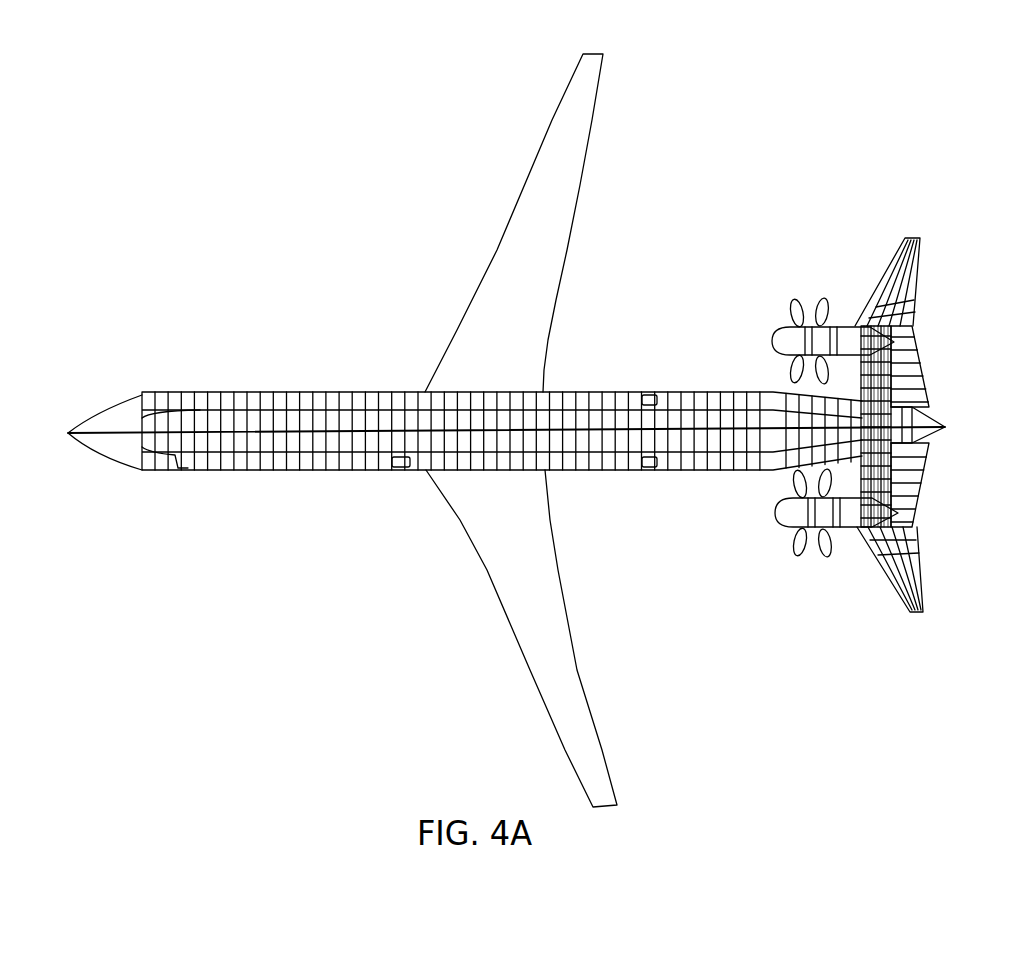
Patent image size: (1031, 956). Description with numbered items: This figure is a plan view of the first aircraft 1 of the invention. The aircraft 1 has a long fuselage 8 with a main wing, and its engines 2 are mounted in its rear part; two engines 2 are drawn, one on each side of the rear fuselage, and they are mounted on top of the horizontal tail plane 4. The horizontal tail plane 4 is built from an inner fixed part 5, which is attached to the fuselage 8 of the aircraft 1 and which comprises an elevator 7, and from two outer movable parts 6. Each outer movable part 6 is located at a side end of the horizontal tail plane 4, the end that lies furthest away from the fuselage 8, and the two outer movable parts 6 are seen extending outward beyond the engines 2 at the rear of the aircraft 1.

The aircraft 1 is at (324, 492).
The engines 2 is at (783, 327).
The horizontal tail plane 4 is at (930, 410).
The inner fixed part 5 is at (892, 398).
The outer movable parts 6 is at (905, 278).
The elevator 7 is at (912, 362).
The fuselage 8 is at (600, 467).